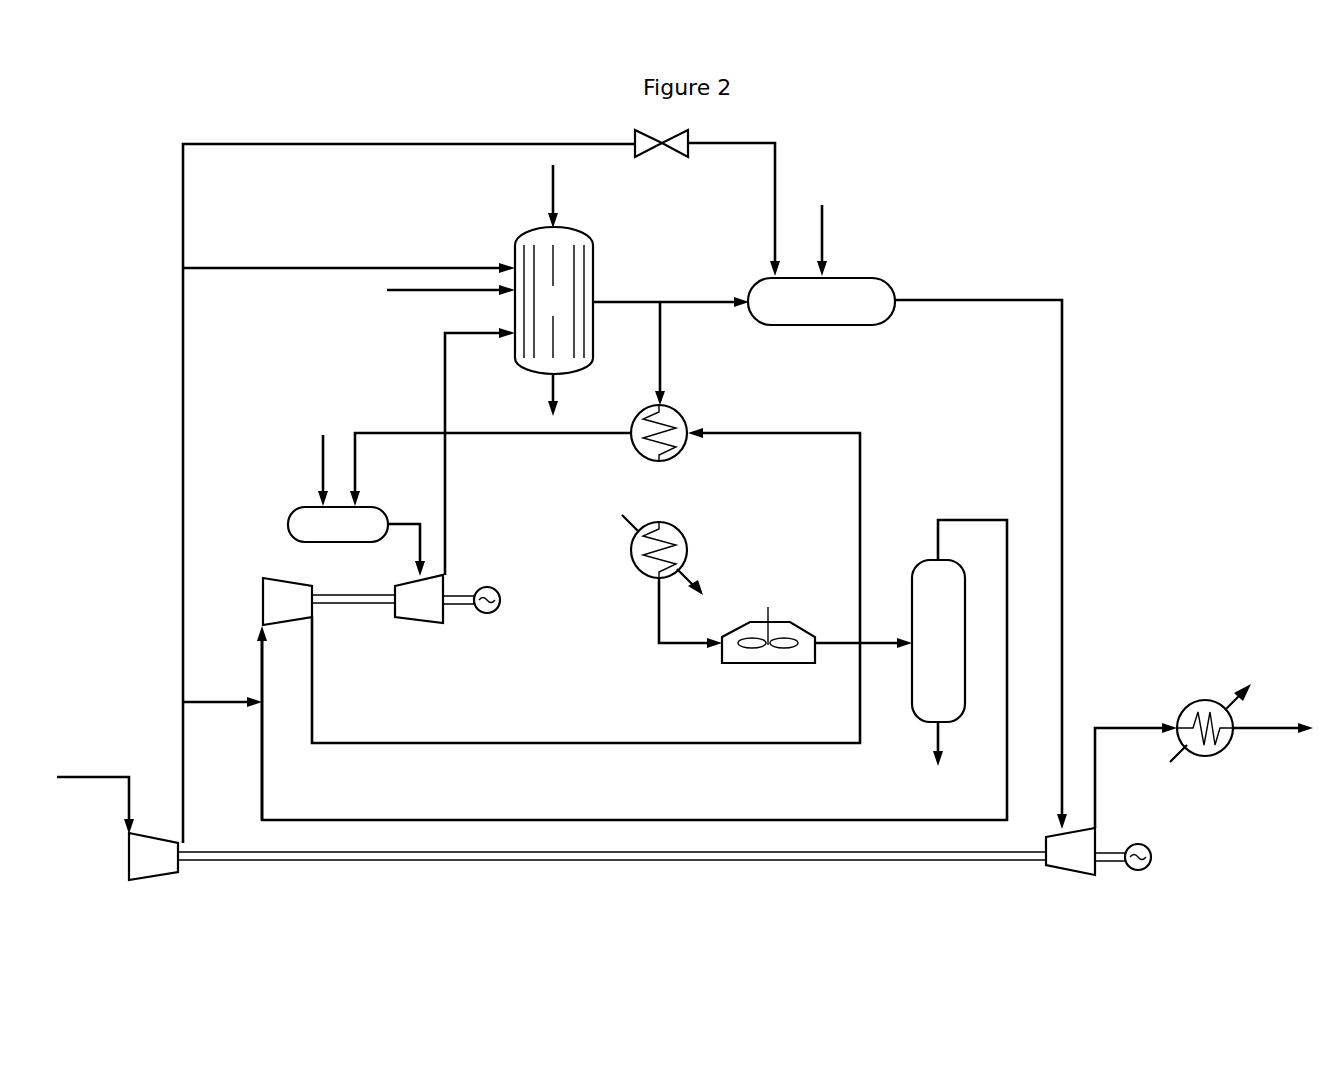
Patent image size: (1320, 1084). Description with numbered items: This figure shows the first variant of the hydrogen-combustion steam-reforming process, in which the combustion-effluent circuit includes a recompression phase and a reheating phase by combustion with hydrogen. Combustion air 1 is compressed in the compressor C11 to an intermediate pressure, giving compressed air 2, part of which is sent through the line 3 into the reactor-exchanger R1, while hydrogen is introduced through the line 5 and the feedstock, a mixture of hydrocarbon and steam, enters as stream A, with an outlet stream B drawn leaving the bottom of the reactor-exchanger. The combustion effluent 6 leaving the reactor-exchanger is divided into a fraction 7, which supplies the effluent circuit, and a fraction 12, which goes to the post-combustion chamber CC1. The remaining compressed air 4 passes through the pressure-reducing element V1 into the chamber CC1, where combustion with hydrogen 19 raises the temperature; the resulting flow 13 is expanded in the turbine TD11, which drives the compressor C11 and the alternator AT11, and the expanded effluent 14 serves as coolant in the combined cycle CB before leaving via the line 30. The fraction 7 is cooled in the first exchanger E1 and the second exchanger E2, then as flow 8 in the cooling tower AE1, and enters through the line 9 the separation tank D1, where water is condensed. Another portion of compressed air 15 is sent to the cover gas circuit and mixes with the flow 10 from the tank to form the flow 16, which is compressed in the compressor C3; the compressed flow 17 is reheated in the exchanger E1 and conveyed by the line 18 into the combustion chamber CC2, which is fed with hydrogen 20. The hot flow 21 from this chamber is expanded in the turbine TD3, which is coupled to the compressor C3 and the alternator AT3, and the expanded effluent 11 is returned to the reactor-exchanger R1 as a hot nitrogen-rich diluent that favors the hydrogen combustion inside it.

The combustion air 1 is at (90, 781).
The compressed air 2 is at (180, 751).
The compressed air line to reactor-exchanger 3 is at (258, 268).
The compressed air bypass portion 4 is at (406, 148).
The hydrogen line 5 is at (412, 294).
The combustion effluent 6 is at (618, 302).
The recycled combustion effluent fraction 7 is at (668, 367).
The cooled combustion effluent 8 is at (658, 613).
The line to separation tank 9 is at (868, 645).
The flow from separation tank 10 is at (672, 818).
The expanded effluent 11 is at (442, 396).
The combustion effluent fraction to post-combustion chamber 12 is at (694, 302).
The post-combustion flow 13 is at (1066, 446).
The expanded effluent 14 is at (1122, 727).
The compressed air portion to cover gas circuit 15 is at (228, 705).
The mixed flow to compressor 16 is at (258, 669).
The recompressed flow 17 is at (565, 742).
The heated gas line from E1 to combustion chamber CC2 18 is at (548, 434).
The hydrogen to post-combustion chamber 19 is at (826, 233).
The hydrogen to combustion chamber 20 is at (320, 464).
The combustion chamber outlet flow 21 is at (398, 522).
The flue gas outlet line from boiler CB 30 is at (1265, 727).
The reactor-exchanger R1 is at (554, 300).
The pressure-reducing element V1 is at (661, 158).
The post-combustion chamber CC1 is at (821, 301).
The combustion chamber CC2 is at (338, 524).
The first exchanger E1 is at (673, 440).
The second exchanger E2 is at (669, 555).
The cooling tower AE1 is at (768, 652).
The separation tank D1 is at (938, 663).
The compressor C3 is at (274, 578).
The turbine TD3 is at (430, 625).
The alternator AT3 is at (509, 568).
The air compressor C11 is at (146, 881).
The turbine TD11 is at (1078, 877).
The alternator AT11 is at (1156, 822).
The combined cycle CB is at (1218, 727).
The reactor-exchanger feedstock A is at (550, 183).
The product stream B is at (556, 382).